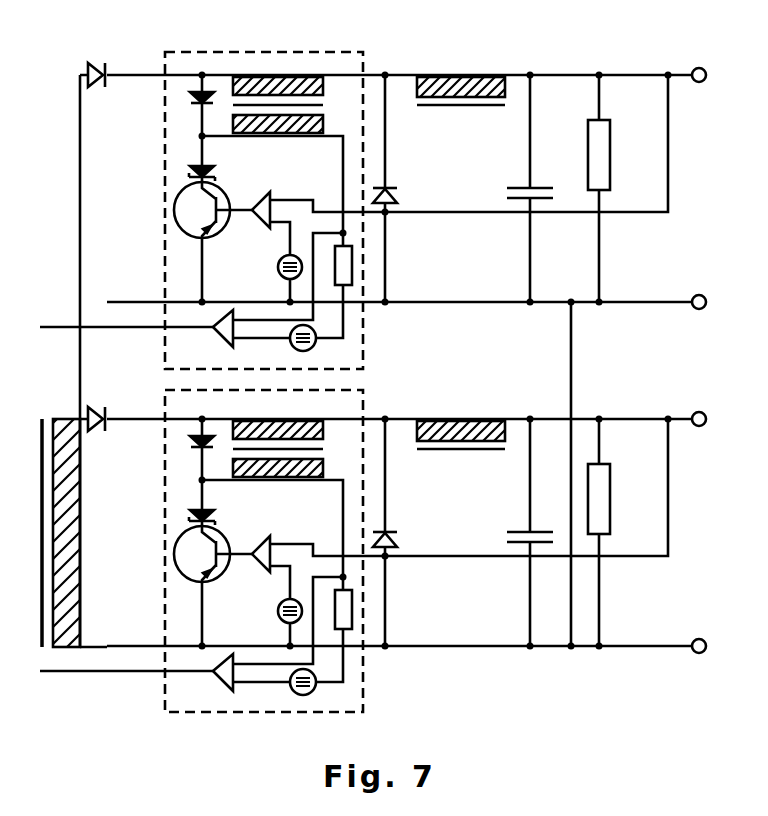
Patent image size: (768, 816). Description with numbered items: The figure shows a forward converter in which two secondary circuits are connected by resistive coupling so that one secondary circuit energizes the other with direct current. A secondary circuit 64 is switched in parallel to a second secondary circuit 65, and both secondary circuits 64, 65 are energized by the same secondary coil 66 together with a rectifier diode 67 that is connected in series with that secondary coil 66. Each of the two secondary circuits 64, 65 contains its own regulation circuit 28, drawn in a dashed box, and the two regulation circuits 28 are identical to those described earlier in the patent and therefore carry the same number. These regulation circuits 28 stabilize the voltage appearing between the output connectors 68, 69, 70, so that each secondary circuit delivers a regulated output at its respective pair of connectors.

The regulation circuit 28 is at (343, 63).
The secondary circuit 64 is at (461, 126).
The secondary circuit 65 is at (461, 467).
The secondary coil 66 is at (67, 543).
The rectifier diode 67 is at (92, 408).
The output connector 68 is at (705, 297).
The output connector 69 is at (705, 414).
The output connector 70 is at (705, 70).